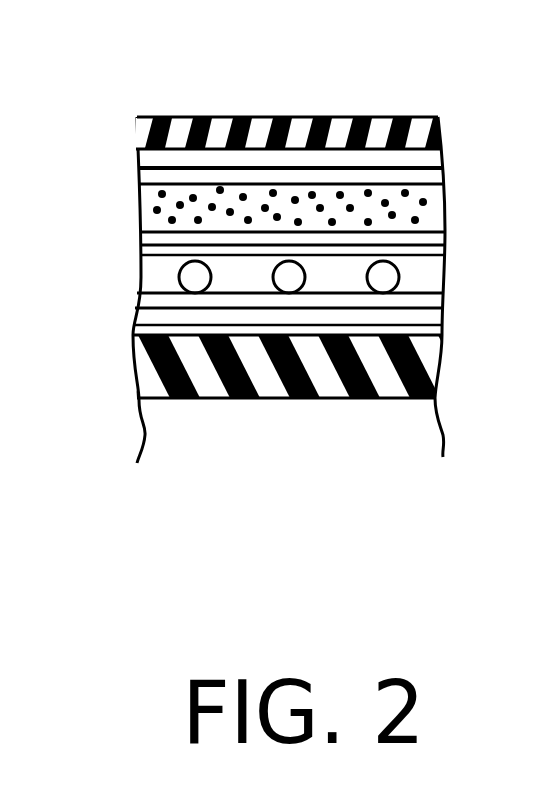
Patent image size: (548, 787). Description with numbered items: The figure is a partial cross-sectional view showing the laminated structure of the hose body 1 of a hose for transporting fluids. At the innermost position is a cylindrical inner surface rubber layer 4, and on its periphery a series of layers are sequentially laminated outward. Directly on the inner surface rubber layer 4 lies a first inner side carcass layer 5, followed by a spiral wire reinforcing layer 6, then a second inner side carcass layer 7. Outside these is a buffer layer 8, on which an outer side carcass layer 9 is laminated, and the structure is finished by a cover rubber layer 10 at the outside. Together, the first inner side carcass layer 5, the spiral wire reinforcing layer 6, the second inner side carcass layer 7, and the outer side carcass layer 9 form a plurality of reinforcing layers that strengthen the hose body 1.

The hose body 1 is at (287, 108).
The inner surface rubber layer 4 is at (142, 368).
The first inner side carcass layer 5 is at (456, 293).
The spiral wire reinforcing layer 6 is at (178, 276).
The second inner side carcass layer 7 is at (456, 231).
The buffer layer 8 is at (142, 204).
The outer side carcass layer 9 is at (456, 152).
The cover rubber layer 10 is at (138, 135).